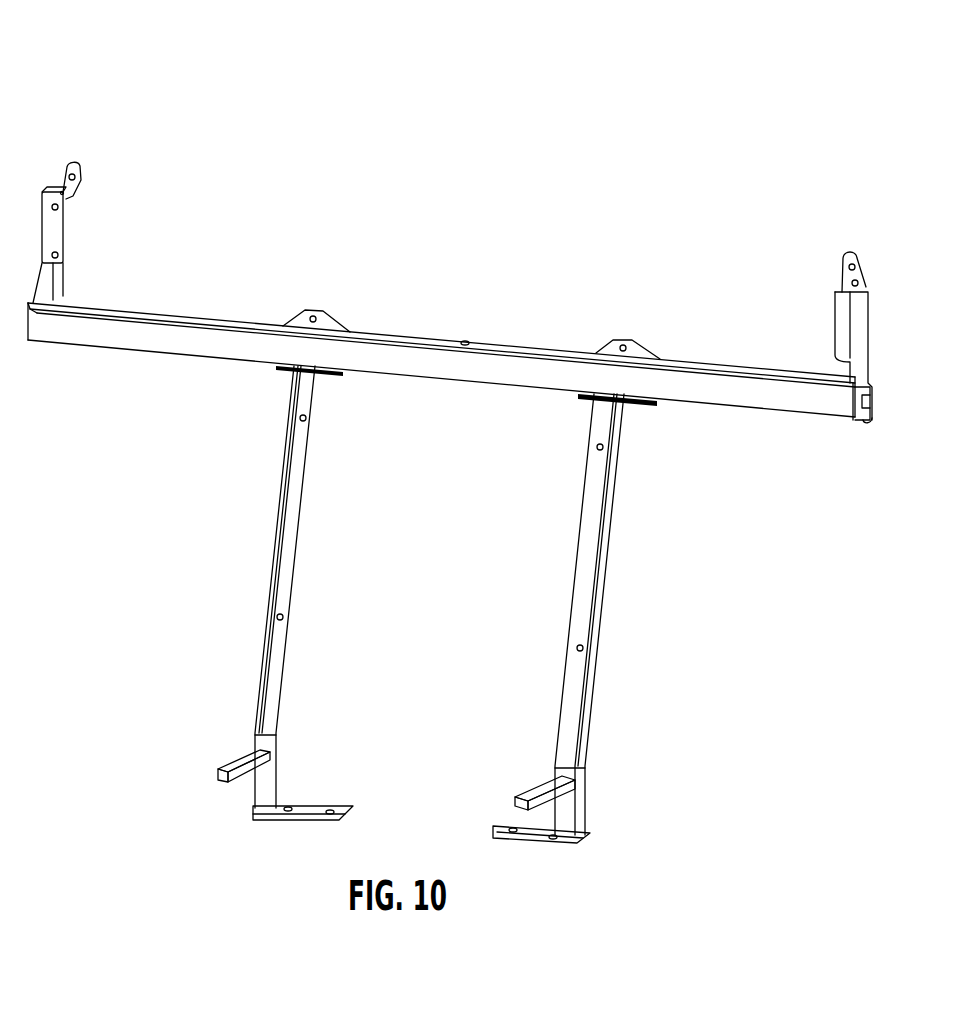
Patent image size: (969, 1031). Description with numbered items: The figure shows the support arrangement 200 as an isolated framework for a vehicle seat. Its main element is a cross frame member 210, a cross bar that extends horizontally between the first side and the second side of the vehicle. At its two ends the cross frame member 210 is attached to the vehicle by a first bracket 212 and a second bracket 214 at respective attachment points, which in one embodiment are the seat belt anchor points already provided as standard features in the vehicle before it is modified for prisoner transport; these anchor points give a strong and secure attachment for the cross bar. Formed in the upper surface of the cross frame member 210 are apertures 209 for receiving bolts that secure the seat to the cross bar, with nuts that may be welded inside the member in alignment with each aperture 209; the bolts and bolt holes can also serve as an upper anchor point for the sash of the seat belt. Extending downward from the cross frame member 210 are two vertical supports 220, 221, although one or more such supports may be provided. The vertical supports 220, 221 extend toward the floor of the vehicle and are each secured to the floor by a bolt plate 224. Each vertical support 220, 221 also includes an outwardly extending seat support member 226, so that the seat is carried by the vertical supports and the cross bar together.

The support arrangement 200 is at (133, 73).
The aperture 209 is at (318, 310).
The cross frame member 210 is at (228, 321).
The first bracket 212 is at (80, 180).
The second bracket 214 is at (840, 278).
The vertical support 220 is at (586, 570).
The vertical support 221 is at (277, 563).
The bolt plate 224 is at (545, 832).
The seat support member 226 is at (515, 800).